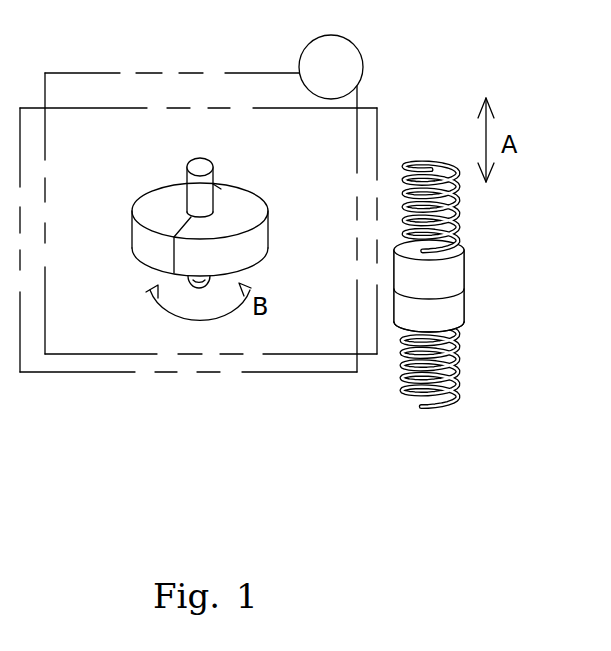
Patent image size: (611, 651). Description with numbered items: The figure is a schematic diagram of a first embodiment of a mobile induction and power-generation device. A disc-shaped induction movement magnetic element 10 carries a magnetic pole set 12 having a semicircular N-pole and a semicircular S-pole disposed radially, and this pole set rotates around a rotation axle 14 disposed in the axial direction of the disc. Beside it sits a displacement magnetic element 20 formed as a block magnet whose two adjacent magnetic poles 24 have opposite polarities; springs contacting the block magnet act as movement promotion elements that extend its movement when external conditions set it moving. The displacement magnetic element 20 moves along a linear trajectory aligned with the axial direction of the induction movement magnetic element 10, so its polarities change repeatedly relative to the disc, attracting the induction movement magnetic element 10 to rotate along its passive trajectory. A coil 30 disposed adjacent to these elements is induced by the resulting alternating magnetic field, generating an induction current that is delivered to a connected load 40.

The induction movement magnetic element 10 is at (235, 215).
The magnetic pole set 12 is at (263, 244).
The rotation axle 14 is at (200, 167).
The displacement magnetic element 20 is at (490, 285).
The adjacent magnetic poles 24 is at (455, 279).
The coil 30 is at (176, 74).
The load 40 is at (361, 58).